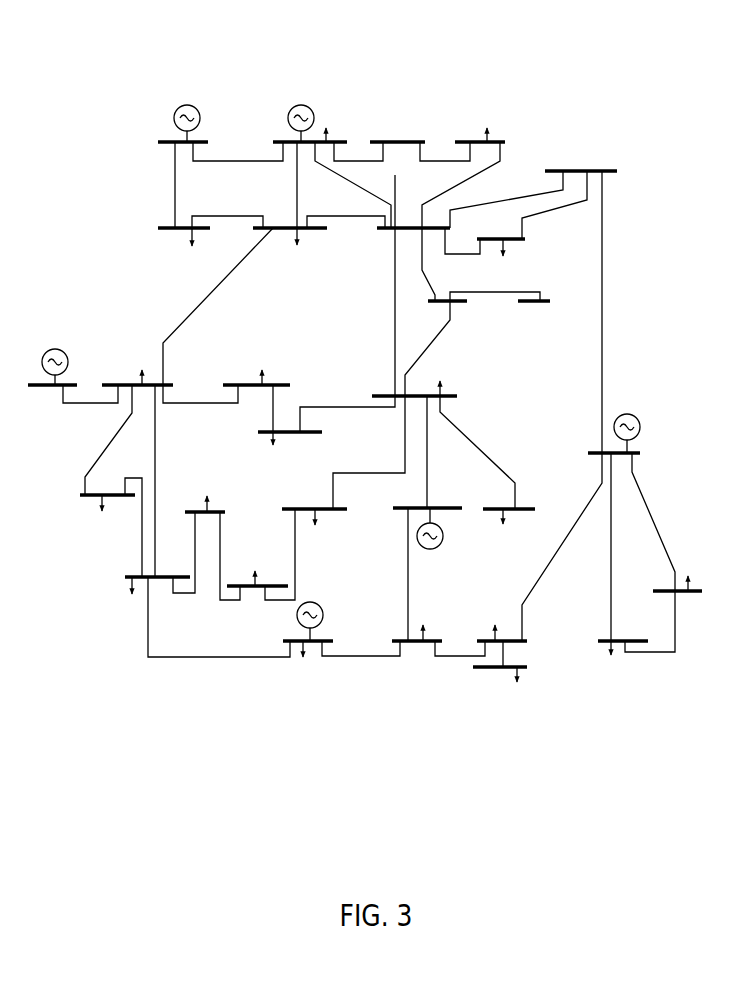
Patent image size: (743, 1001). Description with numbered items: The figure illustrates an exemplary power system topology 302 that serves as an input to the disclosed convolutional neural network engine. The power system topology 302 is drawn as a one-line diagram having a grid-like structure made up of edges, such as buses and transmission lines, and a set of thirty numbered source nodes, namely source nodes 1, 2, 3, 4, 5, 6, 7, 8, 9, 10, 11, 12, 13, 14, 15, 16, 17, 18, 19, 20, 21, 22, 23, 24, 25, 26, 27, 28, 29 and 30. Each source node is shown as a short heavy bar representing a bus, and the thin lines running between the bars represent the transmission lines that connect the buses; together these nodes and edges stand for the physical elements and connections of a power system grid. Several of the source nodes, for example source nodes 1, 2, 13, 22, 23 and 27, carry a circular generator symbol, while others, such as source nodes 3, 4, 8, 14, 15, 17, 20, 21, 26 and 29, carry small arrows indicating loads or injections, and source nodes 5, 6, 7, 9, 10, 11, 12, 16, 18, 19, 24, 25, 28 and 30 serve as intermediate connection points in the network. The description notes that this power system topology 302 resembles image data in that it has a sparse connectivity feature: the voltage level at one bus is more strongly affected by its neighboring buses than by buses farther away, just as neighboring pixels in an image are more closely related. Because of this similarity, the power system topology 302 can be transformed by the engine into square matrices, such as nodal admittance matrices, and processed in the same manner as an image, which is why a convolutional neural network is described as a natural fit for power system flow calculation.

The power system topology 302 is at (543, 112).
The source node 1 is at (179, 123).
The source node 2 is at (302, 129).
The source node 3 is at (184, 240).
The source node 4 is at (295, 241).
The source node 5 is at (397, 131).
The source node 6 is at (408, 240).
The source node 7 is at (480, 131).
The source node 8 is at (515, 244).
The source node 9 is at (446, 312).
The source node 10 is at (440, 393).
The source node 11 is at (532, 312).
The source node 12 is at (137, 375).
The source node 13 is at (52, 380).
The source node 14 is at (97, 506).
The source node 15 is at (137, 585).
The source node 16 is at (252, 375).
The source node 17 is at (290, 446).
The source node 18 is at (199, 498).
The source node 19 is at (257, 570).
The source node 20 is at (314, 508).
The source node 21 is at (495, 525).
The source node 22 is at (414, 528).
The source node 23 is at (303, 629).
The source node 24 is at (404, 628).
The source node 25 is at (497, 622).
The source node 26 is at (509, 673).
The source node 27 is at (597, 446).
The source node 28 is at (581, 158).
The source node 29 is at (613, 632).
The source node 30 is at (665, 595).